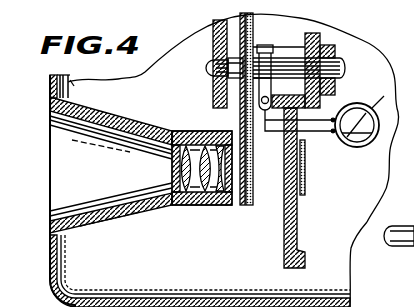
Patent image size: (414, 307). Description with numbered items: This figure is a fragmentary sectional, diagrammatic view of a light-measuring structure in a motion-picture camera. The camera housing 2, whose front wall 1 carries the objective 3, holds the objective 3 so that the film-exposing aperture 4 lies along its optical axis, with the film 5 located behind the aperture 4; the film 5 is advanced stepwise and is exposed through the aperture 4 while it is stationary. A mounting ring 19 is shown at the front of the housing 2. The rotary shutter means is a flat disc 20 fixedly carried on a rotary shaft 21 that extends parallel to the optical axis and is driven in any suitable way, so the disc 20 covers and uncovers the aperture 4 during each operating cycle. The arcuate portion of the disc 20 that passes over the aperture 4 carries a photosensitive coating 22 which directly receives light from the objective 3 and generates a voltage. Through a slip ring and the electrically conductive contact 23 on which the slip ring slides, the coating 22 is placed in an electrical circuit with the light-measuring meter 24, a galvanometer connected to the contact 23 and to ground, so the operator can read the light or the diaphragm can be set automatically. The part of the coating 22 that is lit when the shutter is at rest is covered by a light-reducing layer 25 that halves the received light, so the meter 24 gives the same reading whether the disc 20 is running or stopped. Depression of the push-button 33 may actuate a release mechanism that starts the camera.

The front wall 1 is at (50, 83).
The camera housing 2 is at (338, 260).
The objective 3 is at (50, 200).
The film-exposing aperture 4 is at (297, 200).
The film 5 is at (305, 171).
The mounting ring 19 is at (75, 20).
The flat disc 20 is at (262, 208).
The rotary shaft 21 is at (340, 60).
The photosensitive coating 22 is at (237, 19).
The electrically conductive contact 23 is at (281, 45).
The light-measuring meter 24 is at (394, 72).
The light-reducing layer 25 is at (242, 206).
The push-button 33 is at (398, 226).